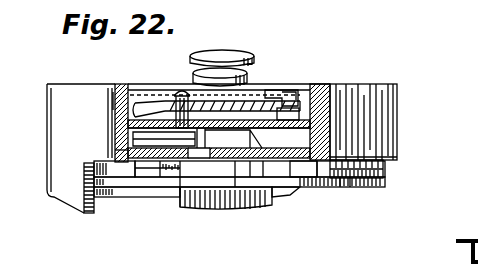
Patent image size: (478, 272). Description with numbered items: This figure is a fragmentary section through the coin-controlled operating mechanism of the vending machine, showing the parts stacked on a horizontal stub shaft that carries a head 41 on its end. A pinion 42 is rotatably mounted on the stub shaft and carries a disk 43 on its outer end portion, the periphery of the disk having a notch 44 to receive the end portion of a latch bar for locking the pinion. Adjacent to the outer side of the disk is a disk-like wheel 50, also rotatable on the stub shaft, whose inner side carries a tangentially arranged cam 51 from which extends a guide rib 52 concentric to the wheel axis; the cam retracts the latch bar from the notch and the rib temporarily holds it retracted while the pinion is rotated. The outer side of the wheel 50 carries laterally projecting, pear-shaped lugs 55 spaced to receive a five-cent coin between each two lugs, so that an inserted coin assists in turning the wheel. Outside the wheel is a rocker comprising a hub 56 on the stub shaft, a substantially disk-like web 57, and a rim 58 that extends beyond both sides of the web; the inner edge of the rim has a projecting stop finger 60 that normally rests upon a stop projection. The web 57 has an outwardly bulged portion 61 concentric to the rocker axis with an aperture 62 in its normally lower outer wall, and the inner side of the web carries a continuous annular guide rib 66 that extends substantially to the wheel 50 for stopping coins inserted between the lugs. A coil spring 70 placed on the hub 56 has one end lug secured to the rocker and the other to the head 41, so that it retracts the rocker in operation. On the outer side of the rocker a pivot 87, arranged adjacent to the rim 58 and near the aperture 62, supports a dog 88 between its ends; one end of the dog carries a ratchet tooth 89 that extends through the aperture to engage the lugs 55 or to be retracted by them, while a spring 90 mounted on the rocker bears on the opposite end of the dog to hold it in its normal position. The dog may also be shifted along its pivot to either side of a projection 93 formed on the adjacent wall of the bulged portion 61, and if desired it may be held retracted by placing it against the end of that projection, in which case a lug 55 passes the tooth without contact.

The head 41 is at (226, 53).
The pinion 42 is at (237, 208).
The disk 43 is at (352, 180).
The notch 44 is at (133, 182).
The disk-like wheel 50 is at (300, 182).
The cam 51 is at (342, 180).
The guide rib 52 is at (384, 171).
The lug 55 is at (330, 136).
The hub 56 is at (240, 84).
The web 57 is at (199, 200).
The rim 58 is at (118, 94).
The stop finger 60 is at (88, 213).
The bulged portion 61 is at (300, 108).
The aperture 62 is at (292, 108).
The annular guide rib 66 is at (115, 152).
The coil spring 70 is at (205, 84).
The pivot 87 is at (116, 130).
The dog 88 is at (190, 158).
The ratchet tooth 89 is at (292, 97).
The spring 90 is at (113, 100).
The projection 93 is at (281, 194).